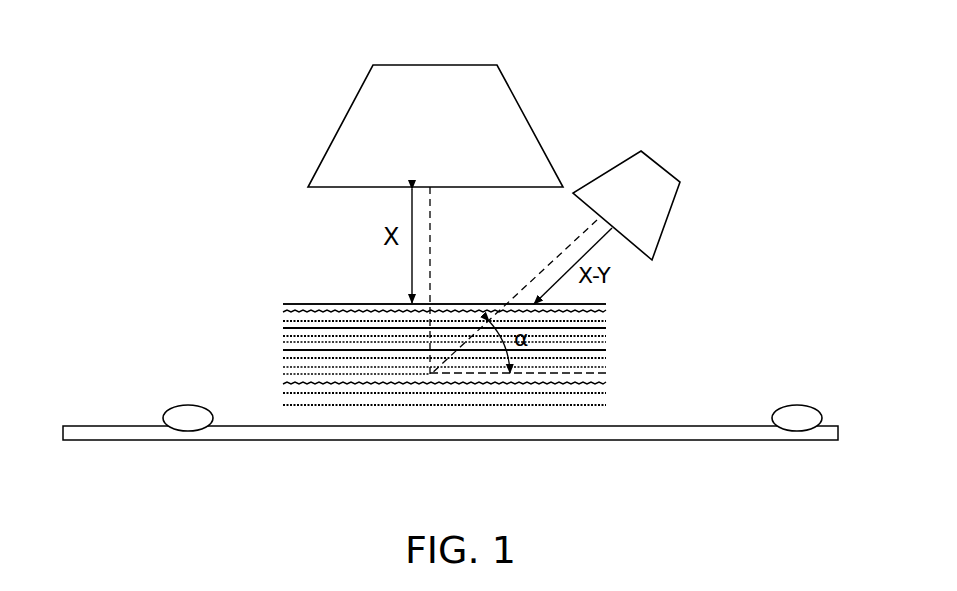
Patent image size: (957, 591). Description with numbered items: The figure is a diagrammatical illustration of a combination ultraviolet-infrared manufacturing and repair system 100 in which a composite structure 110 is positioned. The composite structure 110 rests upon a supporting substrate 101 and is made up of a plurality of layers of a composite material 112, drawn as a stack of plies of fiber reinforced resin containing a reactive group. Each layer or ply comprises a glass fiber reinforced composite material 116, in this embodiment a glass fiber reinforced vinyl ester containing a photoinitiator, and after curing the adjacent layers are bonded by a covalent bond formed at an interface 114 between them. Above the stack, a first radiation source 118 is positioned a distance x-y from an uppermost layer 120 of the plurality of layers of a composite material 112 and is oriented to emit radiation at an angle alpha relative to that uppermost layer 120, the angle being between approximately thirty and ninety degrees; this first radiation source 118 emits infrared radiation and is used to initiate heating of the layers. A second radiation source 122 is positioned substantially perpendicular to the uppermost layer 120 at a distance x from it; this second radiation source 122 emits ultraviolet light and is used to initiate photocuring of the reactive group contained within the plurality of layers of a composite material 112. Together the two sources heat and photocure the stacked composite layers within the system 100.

The combination ultraviolet (UV)-infrared (IR) manufacturing and repair system 100 is at (703, 53).
The supporting substrate 101 is at (580, 442).
The composite structure 110 is at (444, 342).
The plurality of layers of a composite material 112 is at (606, 304).
The interface 114 is at (605, 347).
The glass fiber reinforced composite material 116 is at (605, 380).
The first radiation source 118 is at (662, 182).
The uppermost layer 120 is at (311, 303).
The second radiation source 122 is at (508, 93).